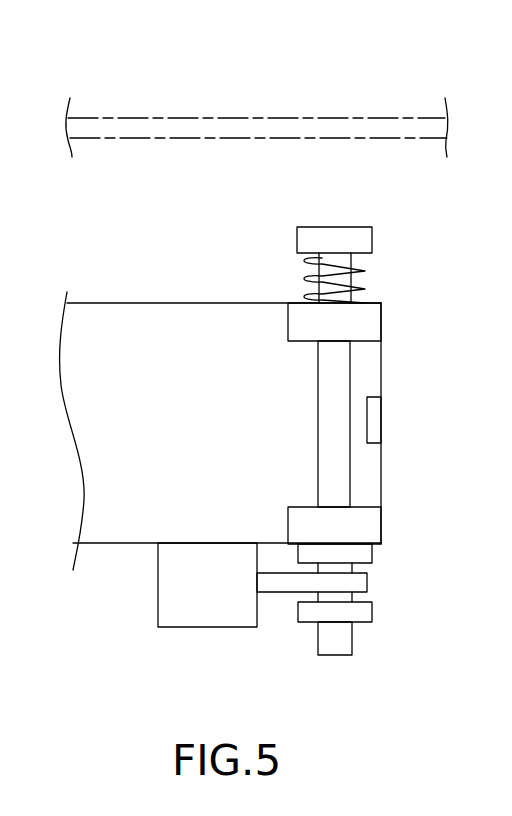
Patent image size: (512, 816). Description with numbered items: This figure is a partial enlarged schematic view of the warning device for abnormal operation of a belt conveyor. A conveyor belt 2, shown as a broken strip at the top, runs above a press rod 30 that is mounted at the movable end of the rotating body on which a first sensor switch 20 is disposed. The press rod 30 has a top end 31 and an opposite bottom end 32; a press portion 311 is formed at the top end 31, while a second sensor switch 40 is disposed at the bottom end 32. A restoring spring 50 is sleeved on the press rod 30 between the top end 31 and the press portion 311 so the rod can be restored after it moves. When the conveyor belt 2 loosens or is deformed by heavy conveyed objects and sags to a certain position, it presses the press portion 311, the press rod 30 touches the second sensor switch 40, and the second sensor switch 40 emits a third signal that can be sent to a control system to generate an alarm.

The conveyor belt 2 is at (215, 132).
The first sensor switch 20 is at (373, 421).
The press rod 30 is at (335, 371).
The top end 31 is at (301, 236).
The press portion 311 is at (347, 237).
The bottom end 32 is at (385, 636).
The second sensor switch 40 is at (175, 589).
The restoring spring 50 is at (358, 285).